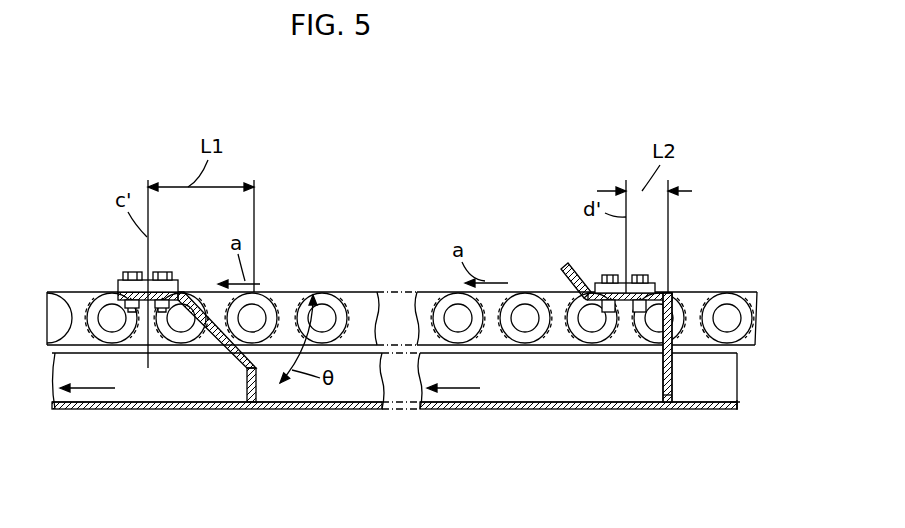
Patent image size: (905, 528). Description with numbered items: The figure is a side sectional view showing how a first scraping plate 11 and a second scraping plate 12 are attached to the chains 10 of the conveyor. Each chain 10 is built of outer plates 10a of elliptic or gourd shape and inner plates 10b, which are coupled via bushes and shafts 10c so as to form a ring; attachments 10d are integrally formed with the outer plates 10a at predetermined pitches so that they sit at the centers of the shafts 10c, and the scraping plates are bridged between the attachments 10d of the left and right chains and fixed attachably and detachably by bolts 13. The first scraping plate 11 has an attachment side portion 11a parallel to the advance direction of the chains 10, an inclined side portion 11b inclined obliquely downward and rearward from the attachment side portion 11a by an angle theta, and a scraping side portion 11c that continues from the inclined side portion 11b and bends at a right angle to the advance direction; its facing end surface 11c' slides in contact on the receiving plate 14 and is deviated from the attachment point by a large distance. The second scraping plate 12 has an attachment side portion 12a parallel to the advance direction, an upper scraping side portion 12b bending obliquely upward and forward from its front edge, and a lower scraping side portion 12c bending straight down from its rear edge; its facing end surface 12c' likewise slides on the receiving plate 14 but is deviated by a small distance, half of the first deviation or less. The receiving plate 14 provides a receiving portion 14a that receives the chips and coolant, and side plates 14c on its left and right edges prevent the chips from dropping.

The chain 10 is at (276, 291).
The outer plate 10a is at (291, 297).
The inner plate 10b is at (368, 292).
The shaft 10c is at (108, 316).
The attachment 10d is at (180, 291).
The first scraping plate 11 is at (216, 405).
The attachment side portion 11a is at (130, 309).
The inclined side portion 11b is at (150, 301).
The scraping side portion 11c is at (217, 380).
The facing end surface 11c' is at (286, 418).
The second scraping plate 12 is at (632, 391).
The attachment side portion 12a is at (617, 301).
The upper scraping side portion 12b is at (587, 302).
The lower scraping side portion 12c is at (648, 384).
The facing end surface 12c' is at (698, 435).
The bolt 13 is at (124, 274).
The receiving plate 14 is at (442, 418).
The receiving portion 14a is at (340, 408).
The side plate 14c is at (717, 406).